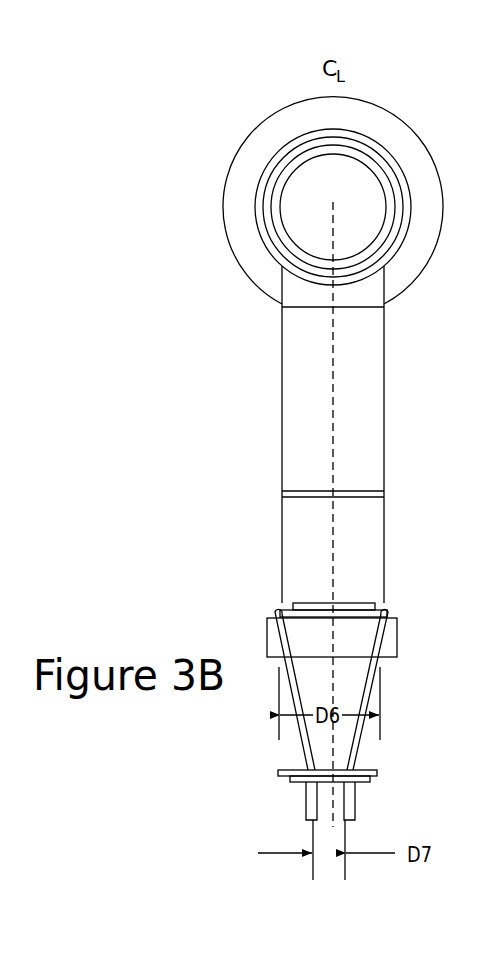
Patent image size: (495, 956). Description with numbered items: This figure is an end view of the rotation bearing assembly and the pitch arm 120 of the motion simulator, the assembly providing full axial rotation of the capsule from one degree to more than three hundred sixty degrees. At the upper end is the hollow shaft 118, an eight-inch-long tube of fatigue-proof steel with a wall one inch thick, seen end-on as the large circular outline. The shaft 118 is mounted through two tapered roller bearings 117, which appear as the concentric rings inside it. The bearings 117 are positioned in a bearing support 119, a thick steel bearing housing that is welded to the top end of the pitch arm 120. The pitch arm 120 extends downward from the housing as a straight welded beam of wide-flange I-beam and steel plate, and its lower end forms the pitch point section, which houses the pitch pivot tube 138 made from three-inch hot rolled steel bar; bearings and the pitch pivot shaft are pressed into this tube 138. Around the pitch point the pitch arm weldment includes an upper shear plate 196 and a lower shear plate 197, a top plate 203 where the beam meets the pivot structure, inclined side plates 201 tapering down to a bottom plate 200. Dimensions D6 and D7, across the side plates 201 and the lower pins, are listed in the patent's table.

The bearings 117 is at (370, 145).
The hollow shaft 118 is at (395, 197).
The bearing support 119 is at (362, 128).
The pitch arm 120 is at (385, 343).
The pitch pivot tube 138 is at (397, 635).
The upper shear plate 196 is at (384, 602).
The lower shear plate 197 is at (278, 772).
The bottom plate 200 is at (355, 783).
The side plate 201 is at (375, 692).
The top plate 203 is at (308, 602).